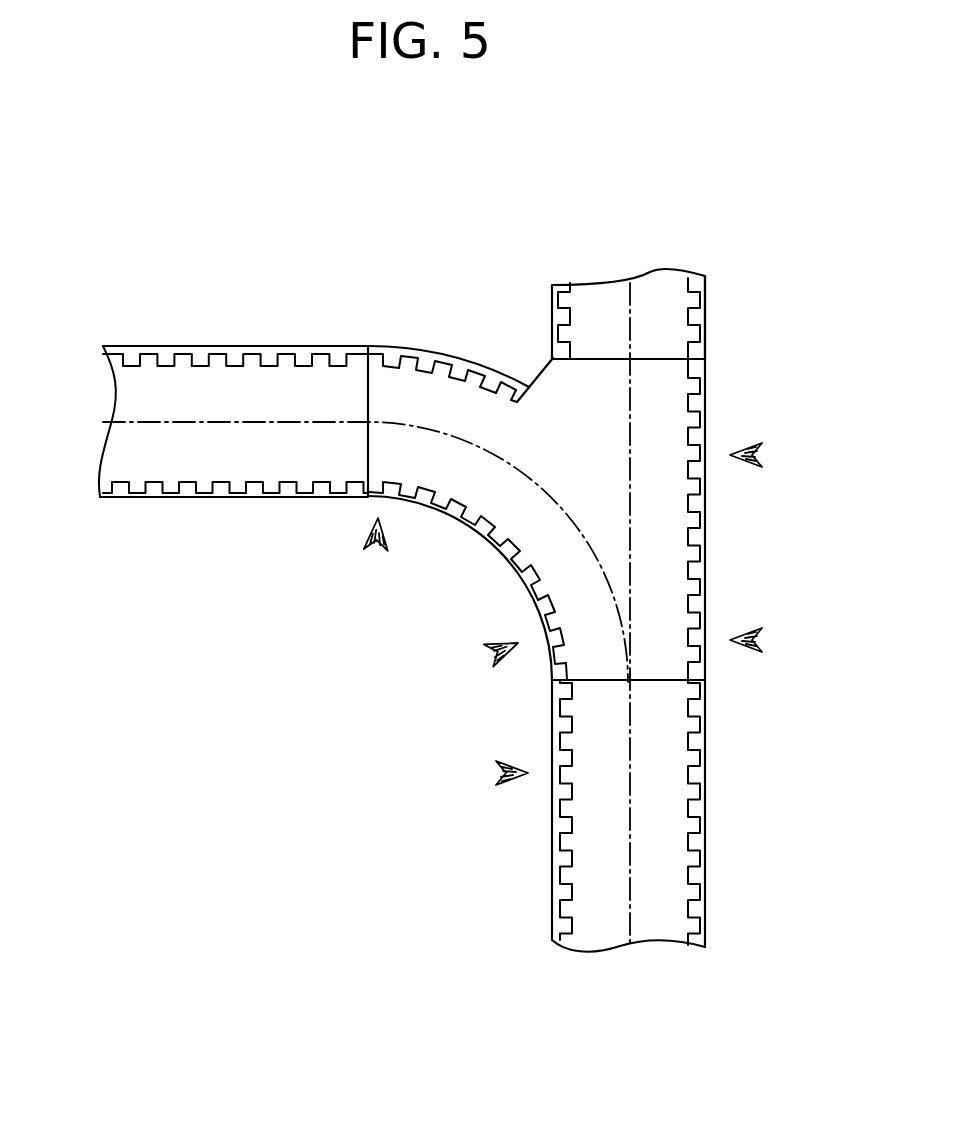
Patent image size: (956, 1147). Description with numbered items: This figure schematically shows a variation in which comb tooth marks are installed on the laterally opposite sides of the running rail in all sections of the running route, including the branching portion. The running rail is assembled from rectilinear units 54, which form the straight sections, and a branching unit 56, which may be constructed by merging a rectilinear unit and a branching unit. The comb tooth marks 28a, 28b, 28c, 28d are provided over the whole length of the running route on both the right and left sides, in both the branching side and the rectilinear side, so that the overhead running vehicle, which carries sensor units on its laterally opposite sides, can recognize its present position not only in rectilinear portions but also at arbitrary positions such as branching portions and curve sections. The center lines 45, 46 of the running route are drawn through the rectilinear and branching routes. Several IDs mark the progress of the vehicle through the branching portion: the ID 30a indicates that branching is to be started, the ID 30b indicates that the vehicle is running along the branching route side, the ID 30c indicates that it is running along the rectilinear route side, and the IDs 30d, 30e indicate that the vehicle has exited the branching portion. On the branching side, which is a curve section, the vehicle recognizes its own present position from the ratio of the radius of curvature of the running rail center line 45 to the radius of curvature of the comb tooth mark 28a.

The comb tooth mark 28a is at (552, 878).
The comb tooth mark 28b is at (332, 346).
The comb tooth mark 28c is at (705, 752).
The comb tooth mark 28d is at (552, 318).
The ID 30a is at (495, 773).
The ID 30b is at (490, 652).
The ID 30c is at (765, 648).
The ID 30d is at (376, 555).
The ID 30e is at (765, 460).
The center line of the running route 45 is at (162, 424).
The center line of the running route 46 is at (630, 313).
The rectilinear unit 54 is at (242, 346).
The branching unit 56 is at (705, 533).